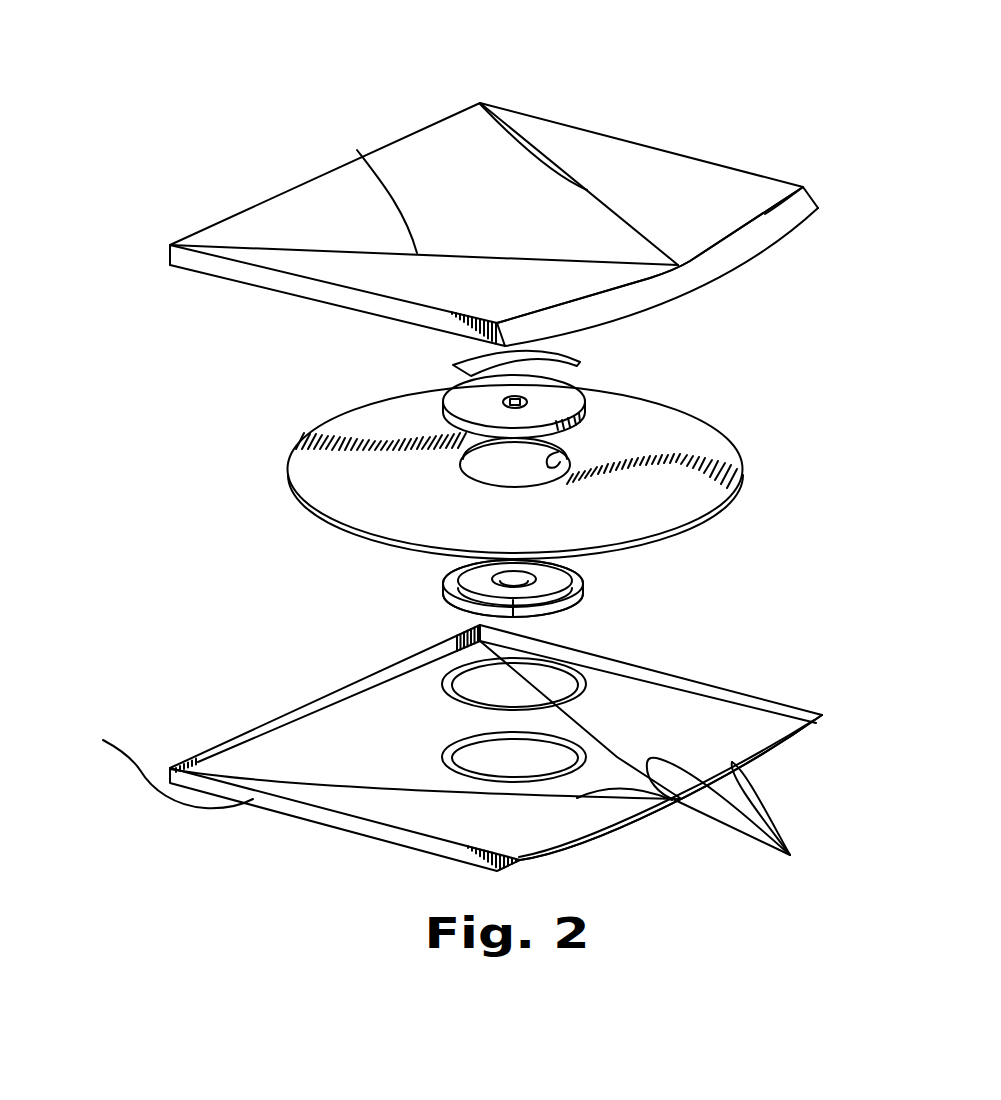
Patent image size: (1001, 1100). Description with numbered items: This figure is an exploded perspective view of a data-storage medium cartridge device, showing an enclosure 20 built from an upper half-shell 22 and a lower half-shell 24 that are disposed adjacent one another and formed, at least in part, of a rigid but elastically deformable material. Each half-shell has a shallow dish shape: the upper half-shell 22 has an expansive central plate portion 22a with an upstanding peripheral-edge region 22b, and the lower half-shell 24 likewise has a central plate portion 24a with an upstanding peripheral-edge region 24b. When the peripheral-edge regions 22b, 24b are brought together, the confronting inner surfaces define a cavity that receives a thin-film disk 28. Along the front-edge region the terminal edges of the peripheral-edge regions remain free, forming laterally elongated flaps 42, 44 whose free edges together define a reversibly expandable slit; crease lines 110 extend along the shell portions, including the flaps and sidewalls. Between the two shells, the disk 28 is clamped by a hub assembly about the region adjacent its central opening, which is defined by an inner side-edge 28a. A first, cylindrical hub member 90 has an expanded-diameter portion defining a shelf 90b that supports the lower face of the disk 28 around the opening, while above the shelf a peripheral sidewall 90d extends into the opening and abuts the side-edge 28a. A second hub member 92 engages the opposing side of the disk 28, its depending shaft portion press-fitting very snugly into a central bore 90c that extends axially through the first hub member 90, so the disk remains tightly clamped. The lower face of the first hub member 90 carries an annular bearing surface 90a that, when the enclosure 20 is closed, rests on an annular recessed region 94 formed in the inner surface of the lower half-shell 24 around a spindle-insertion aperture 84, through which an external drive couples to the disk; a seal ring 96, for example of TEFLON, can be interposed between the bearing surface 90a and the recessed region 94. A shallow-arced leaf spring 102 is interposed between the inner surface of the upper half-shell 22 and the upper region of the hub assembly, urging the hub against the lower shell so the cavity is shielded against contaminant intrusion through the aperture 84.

The enclosure 20 is at (722, 70).
The upper half-shell 22 is at (771, 175).
The central plate portion of upper half-shell 22a is at (360, 217).
The peripheral-edge region of upper half-shell 22b is at (330, 295).
The flap 42 is at (747, 252).
The crease lines 110 is at (530, 147).
The leaf spring 102 is at (453, 362).
The second hub member 92 is at (575, 382).
The thin-film disk 28 is at (703, 440).
The inner side-edge of disk 28a is at (570, 460).
The first hub member 90 is at (592, 577).
The bearing surface 90a is at (578, 597).
The shelf 90b is at (588, 566).
The central bore 90c is at (450, 579).
The peripheral sidewall of hub member 90d is at (510, 613).
The spindle-insertion aperture 84 is at (584, 760).
The seal ring 96 is at (450, 672).
The annular recessed region 94 is at (556, 750).
The lower half-shell 24 is at (775, 761).
The central plate portion of lower half-shell 24a is at (380, 738).
The peripheral-edge region of lower half-shell 24b is at (212, 750).
The flap 44 is at (668, 812).